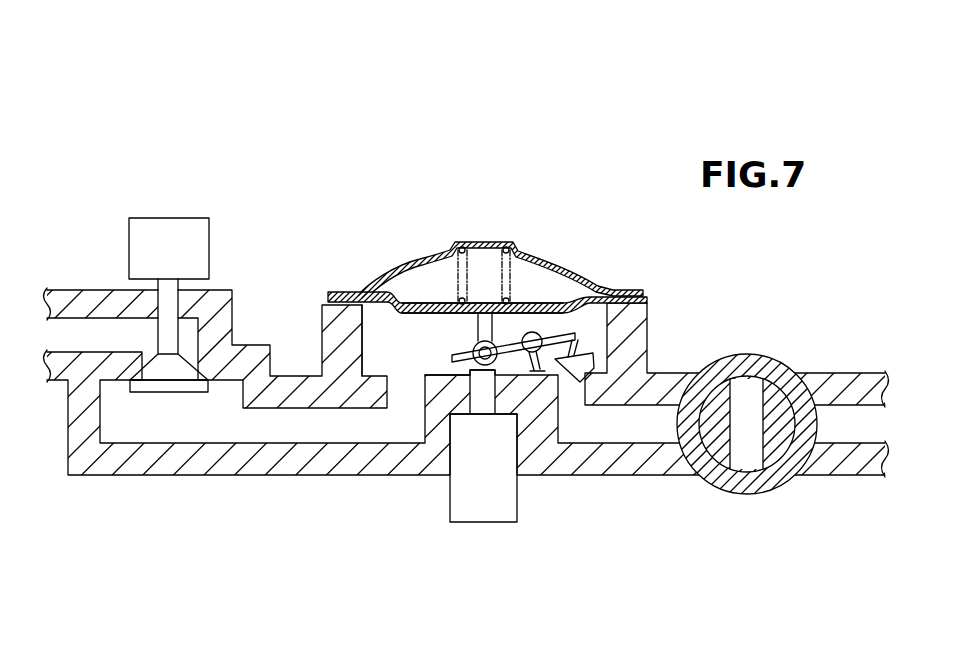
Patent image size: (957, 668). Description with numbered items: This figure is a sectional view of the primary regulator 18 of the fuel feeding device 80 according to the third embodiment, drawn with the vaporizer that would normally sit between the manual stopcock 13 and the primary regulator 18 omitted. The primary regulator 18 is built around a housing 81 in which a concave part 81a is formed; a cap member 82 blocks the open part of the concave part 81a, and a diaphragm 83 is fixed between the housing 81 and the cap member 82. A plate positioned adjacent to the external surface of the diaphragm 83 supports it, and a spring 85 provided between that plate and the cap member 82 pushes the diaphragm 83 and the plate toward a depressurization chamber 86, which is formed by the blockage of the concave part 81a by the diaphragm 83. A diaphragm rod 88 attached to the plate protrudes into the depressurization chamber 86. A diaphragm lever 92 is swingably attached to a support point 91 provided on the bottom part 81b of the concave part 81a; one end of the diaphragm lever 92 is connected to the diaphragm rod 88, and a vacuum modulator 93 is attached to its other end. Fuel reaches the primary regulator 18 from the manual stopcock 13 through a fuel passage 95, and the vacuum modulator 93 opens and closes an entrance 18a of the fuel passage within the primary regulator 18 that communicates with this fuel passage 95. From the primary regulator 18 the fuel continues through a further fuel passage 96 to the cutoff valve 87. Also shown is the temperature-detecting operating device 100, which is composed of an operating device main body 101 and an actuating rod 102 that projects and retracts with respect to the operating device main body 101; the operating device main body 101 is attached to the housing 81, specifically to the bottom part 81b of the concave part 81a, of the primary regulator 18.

The fuel feeding device 80 is at (268, 116).
The cutoff valve 87 is at (166, 230).
The primary regulator 18 is at (414, 247).
The housing 81 is at (318, 304).
The concave part 81a is at (373, 333).
The bottom part 81b is at (438, 375).
The depressurization chamber 86 is at (422, 335).
The spring 85 is at (507, 258).
The cap member 82 is at (548, 257).
The diaphragm 83 is at (551, 303).
The vacuum modulator 93 is at (593, 368).
The manual stopcock 13 is at (741, 352).
The fuel passage 96 is at (307, 446).
The diaphragm rod 88 is at (478, 320).
The actuating rod 102 is at (468, 391).
The operating device main body 101 is at (465, 508).
The temperature-detecting operating device 100 is at (447, 495).
The diaphragm lever 92 is at (509, 353).
The support point 91 is at (537, 367).
The entrance 18a is at (575, 396).
The fuel passage 95 is at (614, 446).